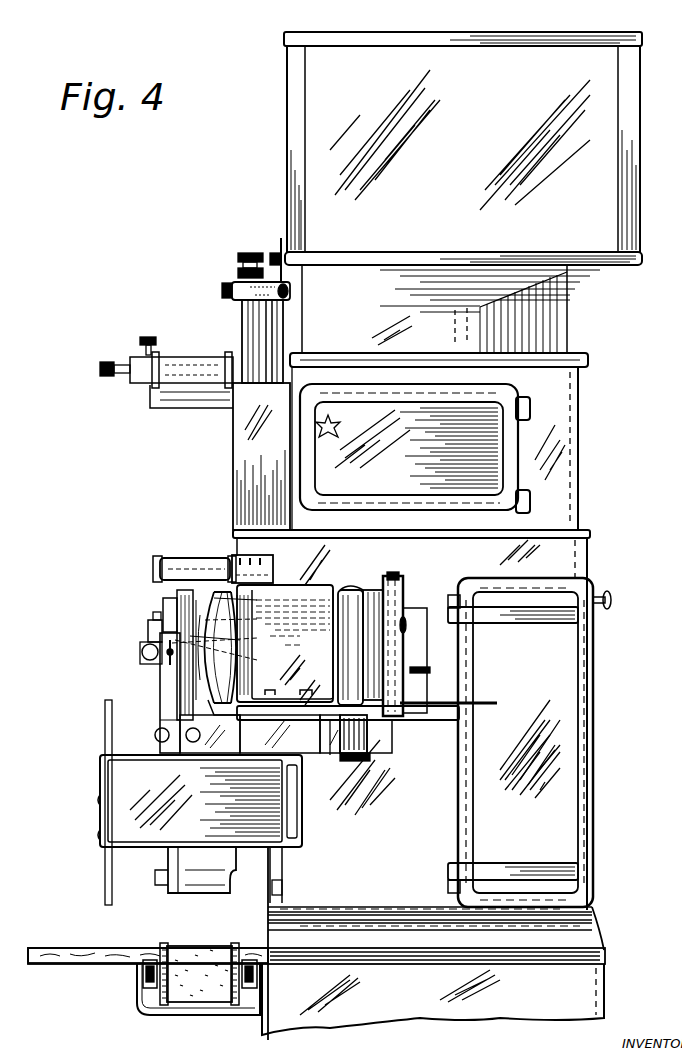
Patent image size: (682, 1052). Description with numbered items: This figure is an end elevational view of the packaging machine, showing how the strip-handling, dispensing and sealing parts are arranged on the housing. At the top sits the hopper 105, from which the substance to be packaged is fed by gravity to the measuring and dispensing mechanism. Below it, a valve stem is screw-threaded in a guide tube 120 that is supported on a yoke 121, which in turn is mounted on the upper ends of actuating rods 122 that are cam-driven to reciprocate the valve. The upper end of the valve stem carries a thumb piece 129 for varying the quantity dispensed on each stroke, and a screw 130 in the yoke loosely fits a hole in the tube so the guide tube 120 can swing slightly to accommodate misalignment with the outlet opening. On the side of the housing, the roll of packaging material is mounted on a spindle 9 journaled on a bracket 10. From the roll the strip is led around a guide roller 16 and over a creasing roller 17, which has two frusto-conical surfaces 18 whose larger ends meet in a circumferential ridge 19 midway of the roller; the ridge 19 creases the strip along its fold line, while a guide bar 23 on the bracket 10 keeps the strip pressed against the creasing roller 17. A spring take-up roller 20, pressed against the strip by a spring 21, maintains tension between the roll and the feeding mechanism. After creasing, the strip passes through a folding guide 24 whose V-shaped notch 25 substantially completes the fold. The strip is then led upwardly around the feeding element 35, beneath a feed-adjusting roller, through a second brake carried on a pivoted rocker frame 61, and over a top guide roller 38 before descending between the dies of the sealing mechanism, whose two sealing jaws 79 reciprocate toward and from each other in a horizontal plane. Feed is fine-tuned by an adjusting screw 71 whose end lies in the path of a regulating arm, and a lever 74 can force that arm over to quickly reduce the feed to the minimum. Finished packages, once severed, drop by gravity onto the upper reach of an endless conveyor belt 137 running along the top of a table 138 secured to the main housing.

The hopper 105 is at (316, 154).
The thumb piece 129 is at (249, 252).
The screw 130 is at (226, 283).
The guide tube 120 is at (245, 312).
The yoke 121 is at (288, 291).
The actuating rods 122 is at (278, 326).
The top guide roller 38 is at (190, 362).
The feeding element 35 is at (183, 560).
The guide bar 23 is at (190, 606).
The rocker frame 61 is at (185, 598).
The lever 74 is at (152, 628).
The adjusting screw 71 is at (142, 650).
The V-shaped notch 25 is at (176, 652).
The folding guide 24 is at (167, 690).
The creasing roller 17 is at (246, 601).
The frusto-conical surfaces 18 is at (226, 646).
The circumferential ridge 19 is at (225, 640).
The guide roller 16 is at (362, 598).
The spindle 9 is at (373, 597).
The spring take-up roller 20 is at (403, 592).
The bracket 10 is at (310, 747).
The spring 21 is at (348, 756).
The sealing jaws 79 is at (160, 863).
The table 138 is at (128, 940).
The endless conveyor belt 137 is at (193, 950).